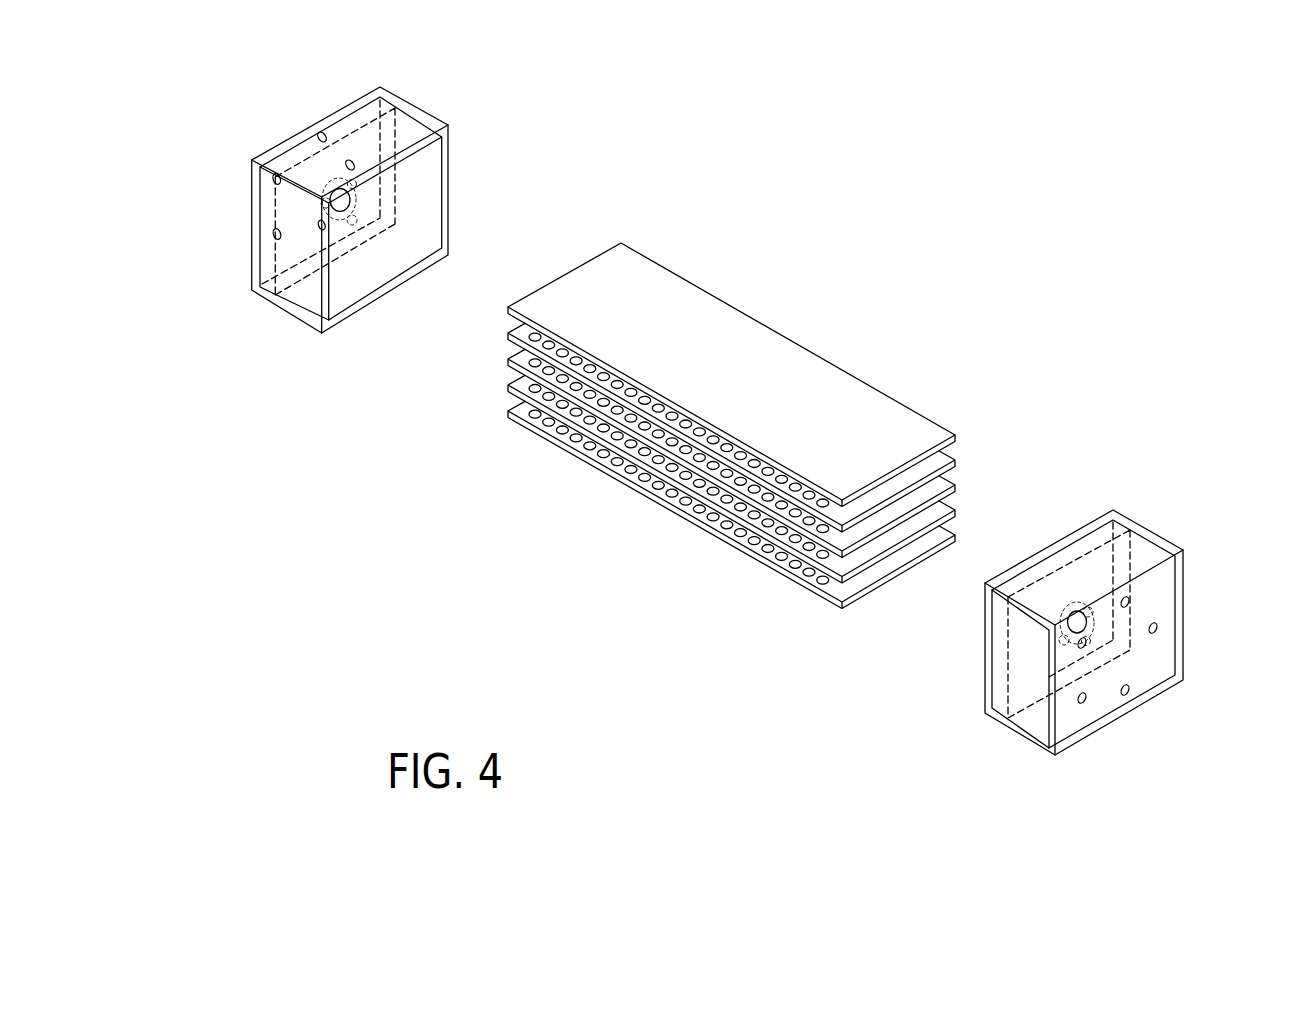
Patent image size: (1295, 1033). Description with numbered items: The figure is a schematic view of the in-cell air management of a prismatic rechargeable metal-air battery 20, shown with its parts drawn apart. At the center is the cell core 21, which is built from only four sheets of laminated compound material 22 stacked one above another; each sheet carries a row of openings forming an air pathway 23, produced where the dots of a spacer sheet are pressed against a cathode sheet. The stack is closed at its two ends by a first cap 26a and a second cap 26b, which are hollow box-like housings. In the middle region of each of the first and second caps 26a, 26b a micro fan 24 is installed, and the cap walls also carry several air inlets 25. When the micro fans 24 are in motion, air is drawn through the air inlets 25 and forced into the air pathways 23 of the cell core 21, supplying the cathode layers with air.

The battery 20 is at (925, 192).
The cell core 21 is at (507, 308).
The laminated compound material 22 is at (770, 347).
The air pathway 23 is at (676, 507).
The micro fan 24 is at (343, 188).
The air inlet 25 is at (325, 136).
The first cap 26a is at (251, 240).
The second cap 26b is at (1145, 708).